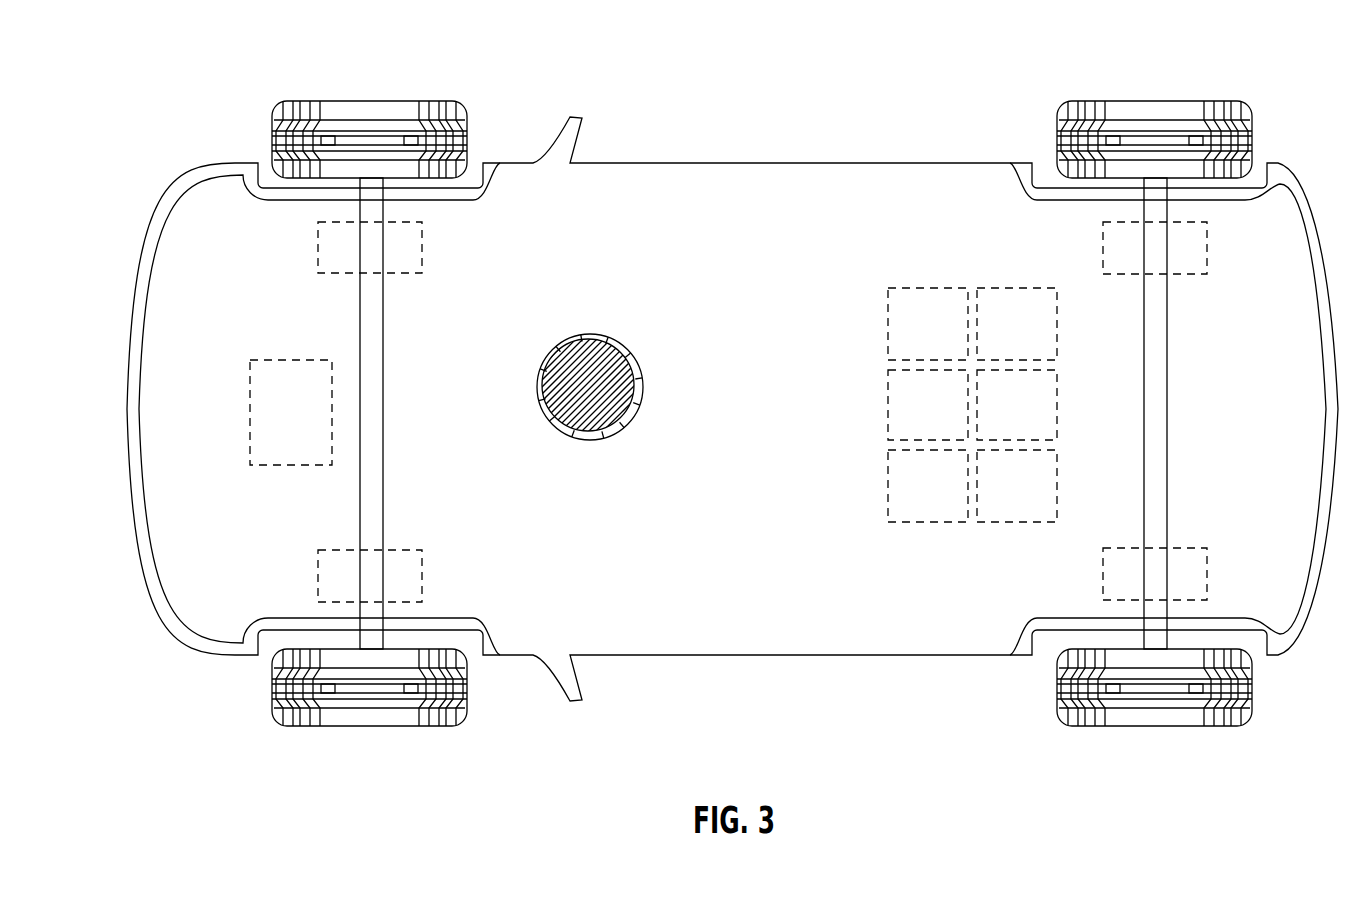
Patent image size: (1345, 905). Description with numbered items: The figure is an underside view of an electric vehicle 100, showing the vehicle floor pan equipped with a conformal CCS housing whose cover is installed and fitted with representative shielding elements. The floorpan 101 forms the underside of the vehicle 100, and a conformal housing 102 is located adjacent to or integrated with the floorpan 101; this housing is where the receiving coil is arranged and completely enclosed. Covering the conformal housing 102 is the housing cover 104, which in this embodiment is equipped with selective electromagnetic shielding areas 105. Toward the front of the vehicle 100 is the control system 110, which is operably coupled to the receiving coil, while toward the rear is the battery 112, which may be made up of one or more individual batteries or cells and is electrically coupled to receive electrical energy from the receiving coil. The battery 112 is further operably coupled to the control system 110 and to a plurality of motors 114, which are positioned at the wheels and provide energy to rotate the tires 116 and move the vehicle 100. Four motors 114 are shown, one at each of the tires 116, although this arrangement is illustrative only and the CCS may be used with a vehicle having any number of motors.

The electric vehicle 100 is at (966, 73).
The floorpan 101 is at (862, 638).
The conformal housing 102 is at (643, 388).
The housing cover 104 is at (580, 412).
The selective electromagnetic shielding areas 105 is at (590, 335).
The control system 110 is at (250, 418).
The battery 112 is at (898, 250).
The motors 114 is at (318, 248).
The tires 116 is at (365, 102).